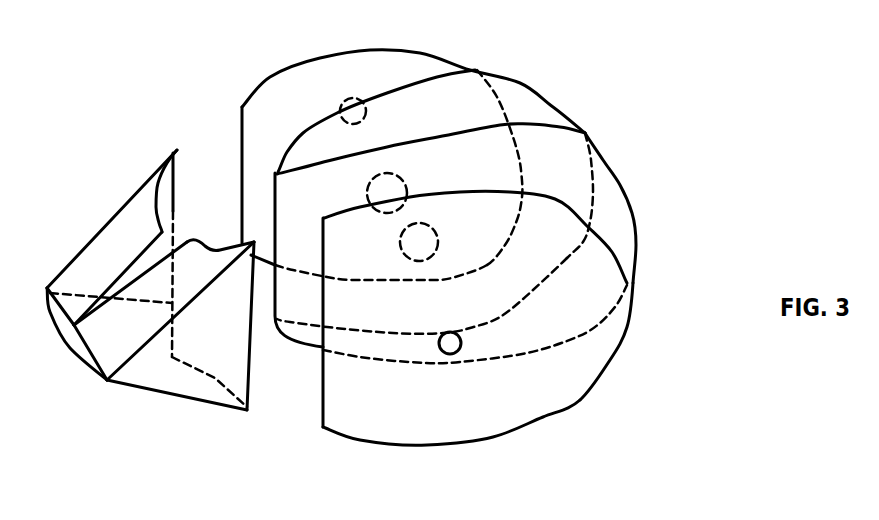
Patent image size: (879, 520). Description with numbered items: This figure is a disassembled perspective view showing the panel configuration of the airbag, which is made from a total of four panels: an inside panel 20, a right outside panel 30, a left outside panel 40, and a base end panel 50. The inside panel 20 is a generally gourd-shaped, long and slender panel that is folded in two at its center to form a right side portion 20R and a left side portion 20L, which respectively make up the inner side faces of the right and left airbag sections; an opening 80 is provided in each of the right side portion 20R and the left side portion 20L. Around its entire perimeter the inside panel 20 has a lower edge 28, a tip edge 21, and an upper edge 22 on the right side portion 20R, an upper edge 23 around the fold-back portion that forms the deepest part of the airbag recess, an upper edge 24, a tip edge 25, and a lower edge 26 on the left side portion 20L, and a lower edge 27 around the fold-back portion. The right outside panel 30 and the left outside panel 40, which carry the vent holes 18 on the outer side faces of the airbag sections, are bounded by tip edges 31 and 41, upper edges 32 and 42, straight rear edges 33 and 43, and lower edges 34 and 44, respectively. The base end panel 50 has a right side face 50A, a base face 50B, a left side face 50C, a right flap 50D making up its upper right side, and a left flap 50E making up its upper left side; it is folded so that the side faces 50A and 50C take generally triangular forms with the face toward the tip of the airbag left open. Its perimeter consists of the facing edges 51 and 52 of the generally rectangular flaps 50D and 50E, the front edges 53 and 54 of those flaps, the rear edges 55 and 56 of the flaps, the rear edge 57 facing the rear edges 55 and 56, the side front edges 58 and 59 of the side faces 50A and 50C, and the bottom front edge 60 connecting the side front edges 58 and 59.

The vent hole 18 is at (462, 343).
The inside panel 20 is at (568, 80).
The right side portion 20R is at (520, 87).
The left side portion 20L is at (620, 177).
The tip edge 21 is at (586, 127).
The upper edge 22 is at (364, 99).
The upper edge 23 is at (291, 167).
The upper edge 24 is at (407, 137).
The tip edge 25 is at (638, 241).
The lower edge 26 is at (407, 363).
The lower edge 27 is at (281, 336).
The lower edge 28 is at (397, 333).
The right outside panel 30 is at (268, 74).
The tip edge 31 is at (513, 170).
The upper edge 32 is at (334, 57).
The straight rear edge 33 is at (241, 134).
The lower edge 34 is at (300, 270).
The left outside panel 40 is at (615, 381).
The tip edge 41 is at (628, 325).
The upper edge 42 is at (455, 192).
The straight rear edge 43 is at (325, 300).
The lower edge 44 is at (395, 446).
The base end panel 50 is at (174, 420).
The right side face 50A is at (83, 246).
The base face 50B is at (87, 365).
The left side face 50C is at (203, 400).
The right flap 50D is at (137, 196).
The left flap 50E is at (190, 300).
The facing edge 51 is at (118, 284).
The facing edge 52 is at (103, 304).
The front edge 53 is at (174, 190).
The front edge 54 is at (212, 244).
The rear edge 55 is at (47, 283).
The rear edge 56 is at (88, 349).
The rear edge 57 is at (72, 350).
The side front edge 58 is at (178, 150).
The side front edge 59 is at (253, 375).
The bottom front edge 60 is at (218, 378).
The opening 80 is at (396, 175).